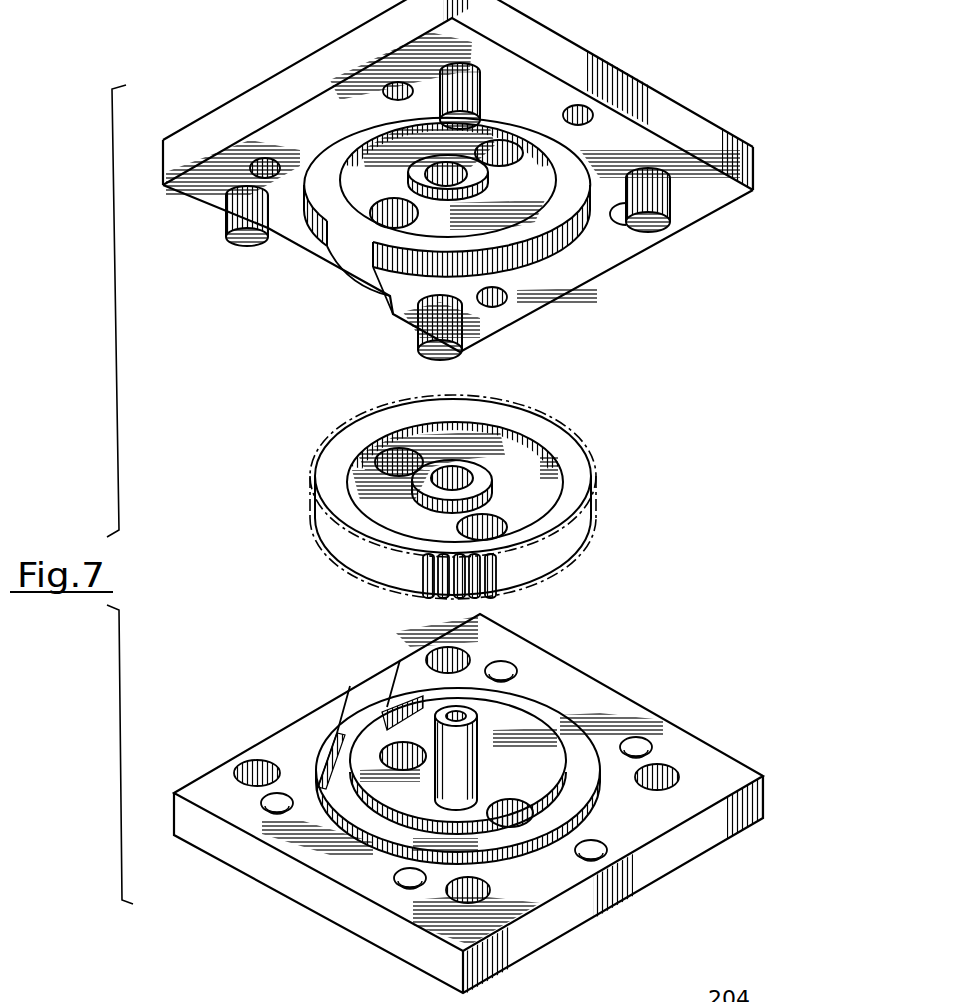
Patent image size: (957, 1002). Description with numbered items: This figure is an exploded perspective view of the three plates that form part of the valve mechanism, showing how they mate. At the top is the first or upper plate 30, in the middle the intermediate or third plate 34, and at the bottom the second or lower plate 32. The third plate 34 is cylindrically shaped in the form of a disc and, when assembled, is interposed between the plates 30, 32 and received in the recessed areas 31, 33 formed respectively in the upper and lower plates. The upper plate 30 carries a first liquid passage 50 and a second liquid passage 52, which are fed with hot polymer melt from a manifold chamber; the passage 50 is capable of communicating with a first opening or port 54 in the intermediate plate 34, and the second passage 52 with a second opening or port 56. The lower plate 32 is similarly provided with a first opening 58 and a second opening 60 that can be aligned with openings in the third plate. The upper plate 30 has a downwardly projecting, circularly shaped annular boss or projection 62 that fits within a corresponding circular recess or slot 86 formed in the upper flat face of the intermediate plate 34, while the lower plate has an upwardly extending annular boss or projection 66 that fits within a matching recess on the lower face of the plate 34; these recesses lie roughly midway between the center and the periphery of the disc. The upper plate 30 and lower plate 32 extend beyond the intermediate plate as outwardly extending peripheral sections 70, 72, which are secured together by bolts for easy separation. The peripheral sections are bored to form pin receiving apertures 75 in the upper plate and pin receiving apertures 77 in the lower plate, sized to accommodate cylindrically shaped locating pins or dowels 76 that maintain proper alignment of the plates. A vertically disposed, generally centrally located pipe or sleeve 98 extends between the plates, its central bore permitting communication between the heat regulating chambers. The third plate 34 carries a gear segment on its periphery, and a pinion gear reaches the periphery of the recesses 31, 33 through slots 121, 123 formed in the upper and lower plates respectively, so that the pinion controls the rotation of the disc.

The first or upper plate 30 is at (483, 180).
The recessed area 31 is at (513, 255).
The second or lower plate 32 is at (468, 804).
The recessed area 33 is at (517, 710).
The intermediate or third plate 34 is at (409, 497).
The first liquid passage 50 is at (410, 215).
The second liquid passage 52 is at (513, 168).
The first opening or port 54 is at (402, 468).
The second opening or port 56 is at (490, 517).
The first opening 58 is at (405, 767).
The second opening 60 is at (520, 810).
The annular boss or projection 62 is at (365, 162).
The annular boss or projection 66 is at (480, 833).
The peripheral section 70 is at (720, 195).
The peripheral section 72 is at (617, 700).
The pin receiving apertures 75 is at (467, 63).
The locating pins or dowels 76 is at (478, 90).
The pin receiving apertures 77 is at (245, 752).
The recess or slot 86 is at (536, 458).
The pipe or sleeve 98 is at (462, 758).
The slot 121 is at (350, 247).
The slot 123 is at (370, 723).